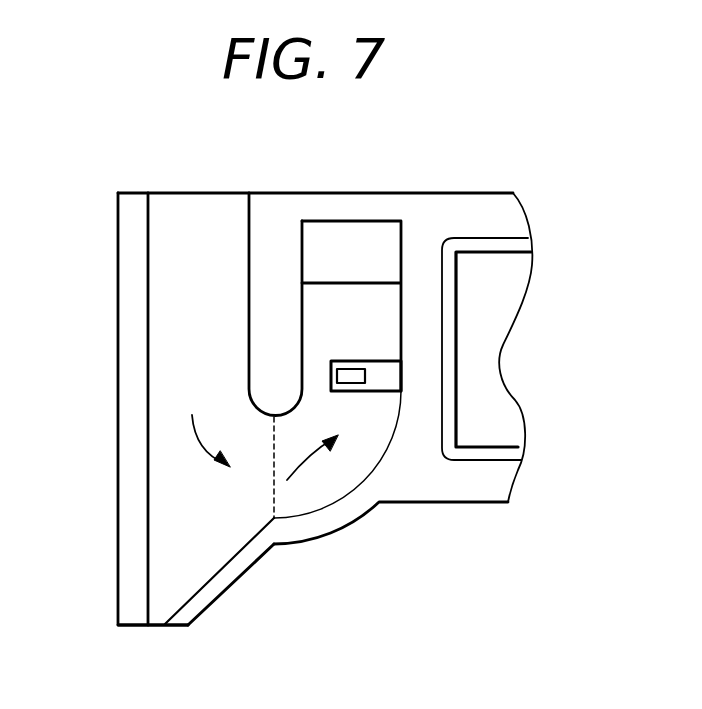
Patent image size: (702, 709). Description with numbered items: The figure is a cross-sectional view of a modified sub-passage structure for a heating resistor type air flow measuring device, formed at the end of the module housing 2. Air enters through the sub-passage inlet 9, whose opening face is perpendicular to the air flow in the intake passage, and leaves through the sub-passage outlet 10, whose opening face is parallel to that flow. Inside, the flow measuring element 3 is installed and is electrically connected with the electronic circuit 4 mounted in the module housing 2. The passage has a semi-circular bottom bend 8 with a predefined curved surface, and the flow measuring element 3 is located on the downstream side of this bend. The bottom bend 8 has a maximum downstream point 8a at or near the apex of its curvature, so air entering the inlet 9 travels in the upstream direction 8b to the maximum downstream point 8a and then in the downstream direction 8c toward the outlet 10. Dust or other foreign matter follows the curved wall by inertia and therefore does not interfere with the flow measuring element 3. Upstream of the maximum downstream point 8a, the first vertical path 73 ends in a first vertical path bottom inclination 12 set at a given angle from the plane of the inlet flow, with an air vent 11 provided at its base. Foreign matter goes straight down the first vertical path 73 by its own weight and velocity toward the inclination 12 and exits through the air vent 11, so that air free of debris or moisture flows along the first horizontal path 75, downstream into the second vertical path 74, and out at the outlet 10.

The module housing 2 is at (490, 193).
The flow measuring element 3 is at (387, 382).
The electronic circuit 4 is at (482, 390).
The sub-passage bottom bend 8 is at (287, 505).
The maximum downstream point 8a is at (278, 520).
The upstream direction 8b is at (202, 443).
The downstream direction 8c is at (327, 480).
The sub-passage inlet 9 is at (172, 192).
The sub-passage outlet 10 is at (352, 257).
The air vent 11 is at (155, 626).
The first vertical path bottom inclination 12 is at (218, 582).
The first vertical path 73 is at (172, 345).
The second vertical path 74 is at (370, 330).
The first horizontal path 75 is at (263, 480).